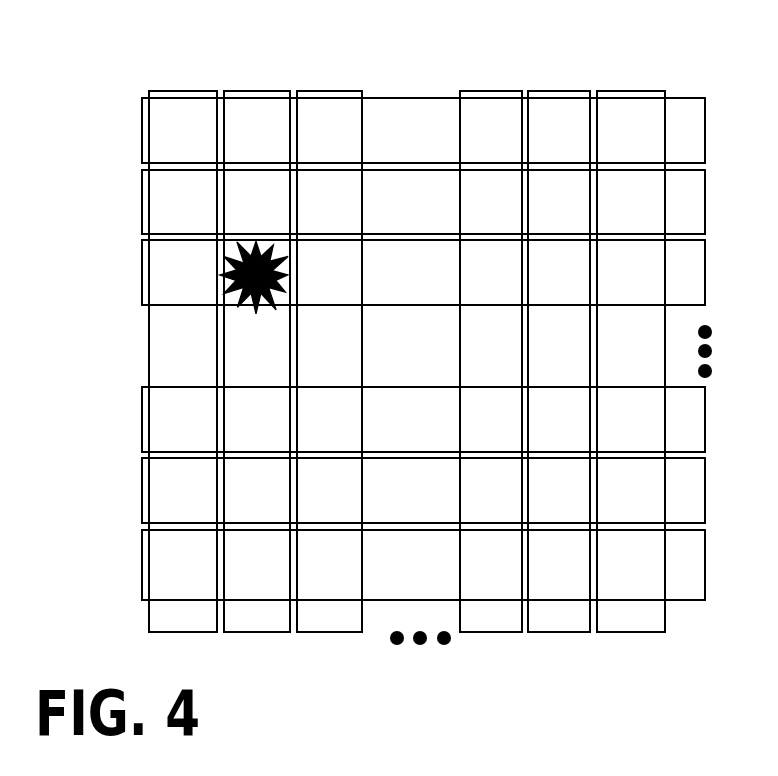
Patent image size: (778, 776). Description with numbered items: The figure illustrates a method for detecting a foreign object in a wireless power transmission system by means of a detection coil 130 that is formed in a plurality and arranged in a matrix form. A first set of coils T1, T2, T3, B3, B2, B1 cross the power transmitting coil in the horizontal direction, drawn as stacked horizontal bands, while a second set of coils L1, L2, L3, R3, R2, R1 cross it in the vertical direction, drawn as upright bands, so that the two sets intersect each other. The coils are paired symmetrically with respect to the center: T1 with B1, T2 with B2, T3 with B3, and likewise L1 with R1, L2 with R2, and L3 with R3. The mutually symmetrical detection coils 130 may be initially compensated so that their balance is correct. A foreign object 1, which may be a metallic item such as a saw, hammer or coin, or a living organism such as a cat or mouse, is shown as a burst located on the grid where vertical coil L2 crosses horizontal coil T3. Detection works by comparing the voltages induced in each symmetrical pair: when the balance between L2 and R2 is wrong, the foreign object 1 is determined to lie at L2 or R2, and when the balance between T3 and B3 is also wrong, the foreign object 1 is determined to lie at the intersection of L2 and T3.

The foreign object 1 is at (240, 235).
The detection coil 130 is at (446, 75).
The horizontal detection coil T1 is at (437, 130).
The horizontal detection coil T2 is at (437, 202).
The horizontal detection coil T3 is at (437, 272).
The horizontal detection coil B1 is at (437, 565).
The horizontal detection coil B2 is at (437, 490).
The horizontal detection coil B3 is at (437, 419).
The vertical detection coil L1 is at (183, 377).
The vertical detection coil L2 is at (257, 377).
The vertical detection coil L3 is at (329, 377).
The vertical detection coil R1 is at (631, 377).
The vertical detection coil R2 is at (559, 377).
The vertical detection coil R3 is at (491, 377).